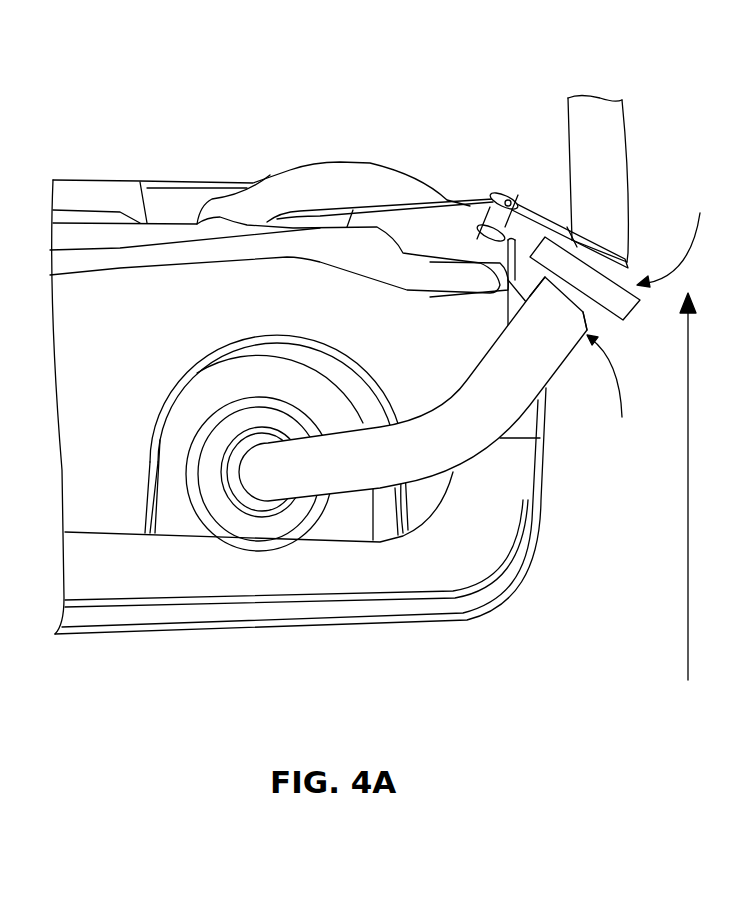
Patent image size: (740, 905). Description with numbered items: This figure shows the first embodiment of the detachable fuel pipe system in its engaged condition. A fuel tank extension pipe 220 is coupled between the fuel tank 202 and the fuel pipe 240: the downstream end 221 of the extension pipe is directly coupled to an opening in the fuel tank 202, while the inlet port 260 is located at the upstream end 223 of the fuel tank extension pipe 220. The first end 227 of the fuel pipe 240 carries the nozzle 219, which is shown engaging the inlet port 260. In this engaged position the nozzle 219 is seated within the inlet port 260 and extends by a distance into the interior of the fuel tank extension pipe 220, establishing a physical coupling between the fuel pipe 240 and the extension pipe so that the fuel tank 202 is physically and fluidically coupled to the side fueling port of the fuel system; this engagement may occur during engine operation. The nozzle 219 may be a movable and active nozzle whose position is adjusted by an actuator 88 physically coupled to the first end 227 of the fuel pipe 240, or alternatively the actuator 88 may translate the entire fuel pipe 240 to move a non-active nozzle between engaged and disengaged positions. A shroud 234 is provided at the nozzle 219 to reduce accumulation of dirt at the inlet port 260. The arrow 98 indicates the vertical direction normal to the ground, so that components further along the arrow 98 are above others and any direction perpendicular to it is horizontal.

The actuator 88 is at (493, 193).
The arrow 98 is at (664, 486).
The fuel tank 202 is at (308, 562).
The nozzle 219 is at (583, 310).
The fuel tank extension pipe 220 is at (403, 483).
The downstream end 221 is at (237, 513).
The upstream end 223 is at (570, 363).
The first end 227 is at (681, 241).
The shroud 234 is at (630, 305).
The fuel pipe 240 is at (587, 128).
The inlet port 260 is at (607, 386).